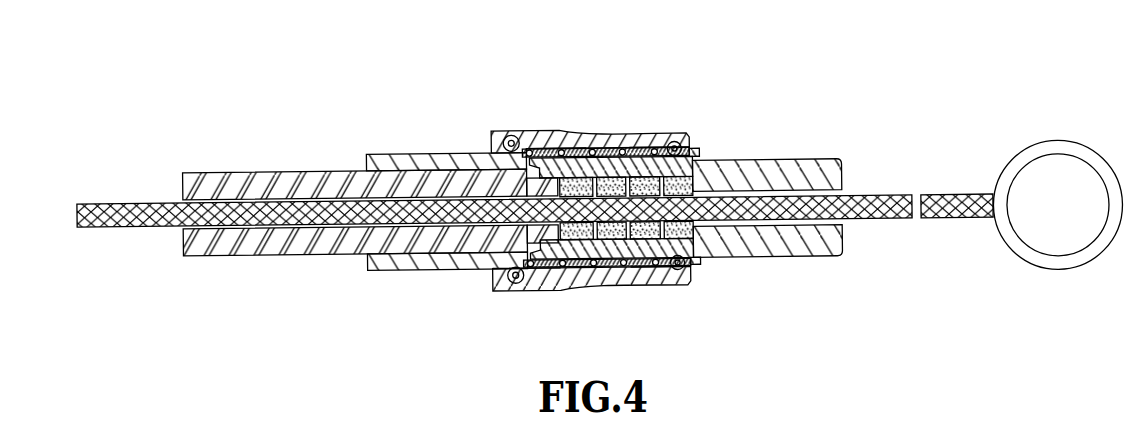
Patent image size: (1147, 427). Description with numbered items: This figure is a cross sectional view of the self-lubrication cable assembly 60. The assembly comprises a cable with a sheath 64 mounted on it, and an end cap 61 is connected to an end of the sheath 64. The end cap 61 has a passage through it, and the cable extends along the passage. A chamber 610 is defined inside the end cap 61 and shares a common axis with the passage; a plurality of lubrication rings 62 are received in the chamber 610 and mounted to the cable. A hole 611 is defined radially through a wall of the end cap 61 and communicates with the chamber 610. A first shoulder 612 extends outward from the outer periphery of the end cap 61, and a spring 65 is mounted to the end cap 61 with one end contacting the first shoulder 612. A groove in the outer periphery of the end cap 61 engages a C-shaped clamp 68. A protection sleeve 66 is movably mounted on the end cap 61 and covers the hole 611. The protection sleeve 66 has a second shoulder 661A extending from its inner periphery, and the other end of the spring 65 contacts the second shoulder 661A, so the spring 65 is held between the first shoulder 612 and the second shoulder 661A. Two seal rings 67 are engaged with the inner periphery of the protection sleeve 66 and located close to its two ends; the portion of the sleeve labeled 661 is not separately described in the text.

The self-lubrication cable assembly 60 is at (456, 138).
The end cap 61 is at (803, 258).
The lubrication rings 62 is at (635, 276).
The sheath 64 is at (297, 258).
The spring 65 is at (618, 279).
The protection sleeve 66 is at (612, 137).
The nut upper shell portion 661 is at (562, 132).
The second shoulder 661A is at (655, 283).
The hole 611 is at (650, 143).
The chamber 610 is at (580, 268).
The first shoulder 612 is at (523, 281).
The seal rings 67 is at (514, 284).
The C-shaped clamp 68 is at (699, 150).